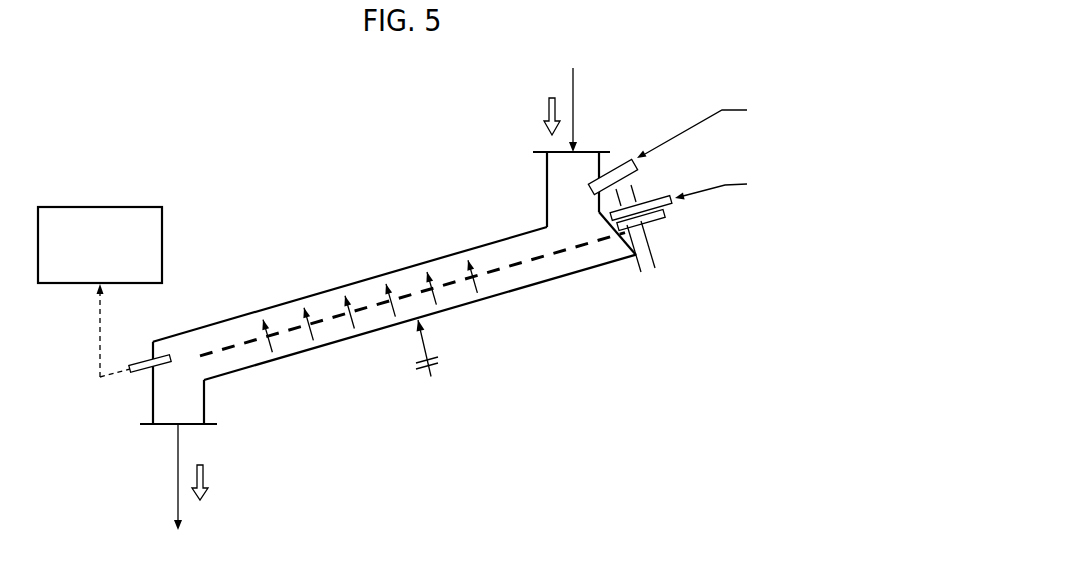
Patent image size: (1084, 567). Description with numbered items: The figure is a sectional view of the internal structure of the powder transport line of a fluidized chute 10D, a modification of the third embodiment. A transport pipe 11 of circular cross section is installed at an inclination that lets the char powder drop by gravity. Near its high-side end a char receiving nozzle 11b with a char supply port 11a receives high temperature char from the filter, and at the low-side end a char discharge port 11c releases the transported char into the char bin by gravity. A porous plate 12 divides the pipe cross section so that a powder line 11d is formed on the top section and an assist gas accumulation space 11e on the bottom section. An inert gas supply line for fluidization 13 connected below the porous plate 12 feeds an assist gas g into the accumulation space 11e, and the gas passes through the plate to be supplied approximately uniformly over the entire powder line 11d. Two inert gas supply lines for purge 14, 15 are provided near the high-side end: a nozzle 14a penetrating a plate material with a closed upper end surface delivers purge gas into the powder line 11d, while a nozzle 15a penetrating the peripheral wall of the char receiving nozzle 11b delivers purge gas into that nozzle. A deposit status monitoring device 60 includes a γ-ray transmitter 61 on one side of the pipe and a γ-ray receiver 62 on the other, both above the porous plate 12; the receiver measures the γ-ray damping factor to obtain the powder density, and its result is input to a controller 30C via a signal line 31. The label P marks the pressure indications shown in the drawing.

The fluidized chute 10D is at (371, 179).
The transport pipe 11 is at (328, 283).
The char supply port 11a is at (592, 150).
The char receiving nozzle 11b is at (546, 180).
The char discharge port 11c is at (160, 436).
The powder line 11d is at (286, 313).
The assist gas accumulation space 11e is at (290, 349).
The porous plate 12 is at (518, 267).
The inert gas supply line for fluidization 13 is at (432, 377).
The inert gas supply line for purge 14 is at (720, 188).
The nozzle 14a is at (657, 197).
The inert gas supply line for purge 15 is at (702, 118).
The nozzle 15a is at (627, 155).
The controller 30C is at (99, 205).
The signal line 31 is at (98, 337).
The deposit status monitoring device 60 is at (142, 350).
The γ-ray transmitter 61 is at (653, 228).
The γ-ray receiver 62 is at (140, 376).
The assist gas g is at (472, 289).
The pressure P is at (543, 110).